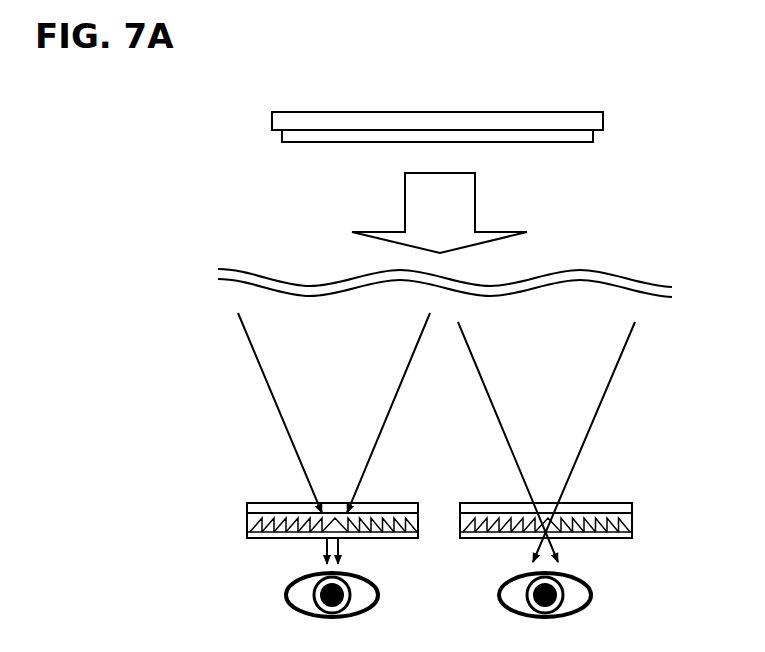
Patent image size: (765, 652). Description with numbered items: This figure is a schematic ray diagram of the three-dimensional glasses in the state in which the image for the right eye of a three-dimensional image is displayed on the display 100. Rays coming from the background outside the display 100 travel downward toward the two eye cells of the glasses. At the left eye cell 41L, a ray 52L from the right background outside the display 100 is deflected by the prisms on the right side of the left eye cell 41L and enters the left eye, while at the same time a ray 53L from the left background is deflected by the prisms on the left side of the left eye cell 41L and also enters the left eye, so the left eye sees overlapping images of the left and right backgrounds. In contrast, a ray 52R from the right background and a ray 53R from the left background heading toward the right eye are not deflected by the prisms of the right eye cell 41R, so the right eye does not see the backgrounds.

The display 100 is at (581, 118).
The ray 53L is at (261, 371).
The ray 52L is at (413, 355).
The ray 53R is at (469, 348).
The ray 52R is at (624, 348).
The left eye cell 41L is at (411, 503).
The right eye cell 41R is at (619, 503).